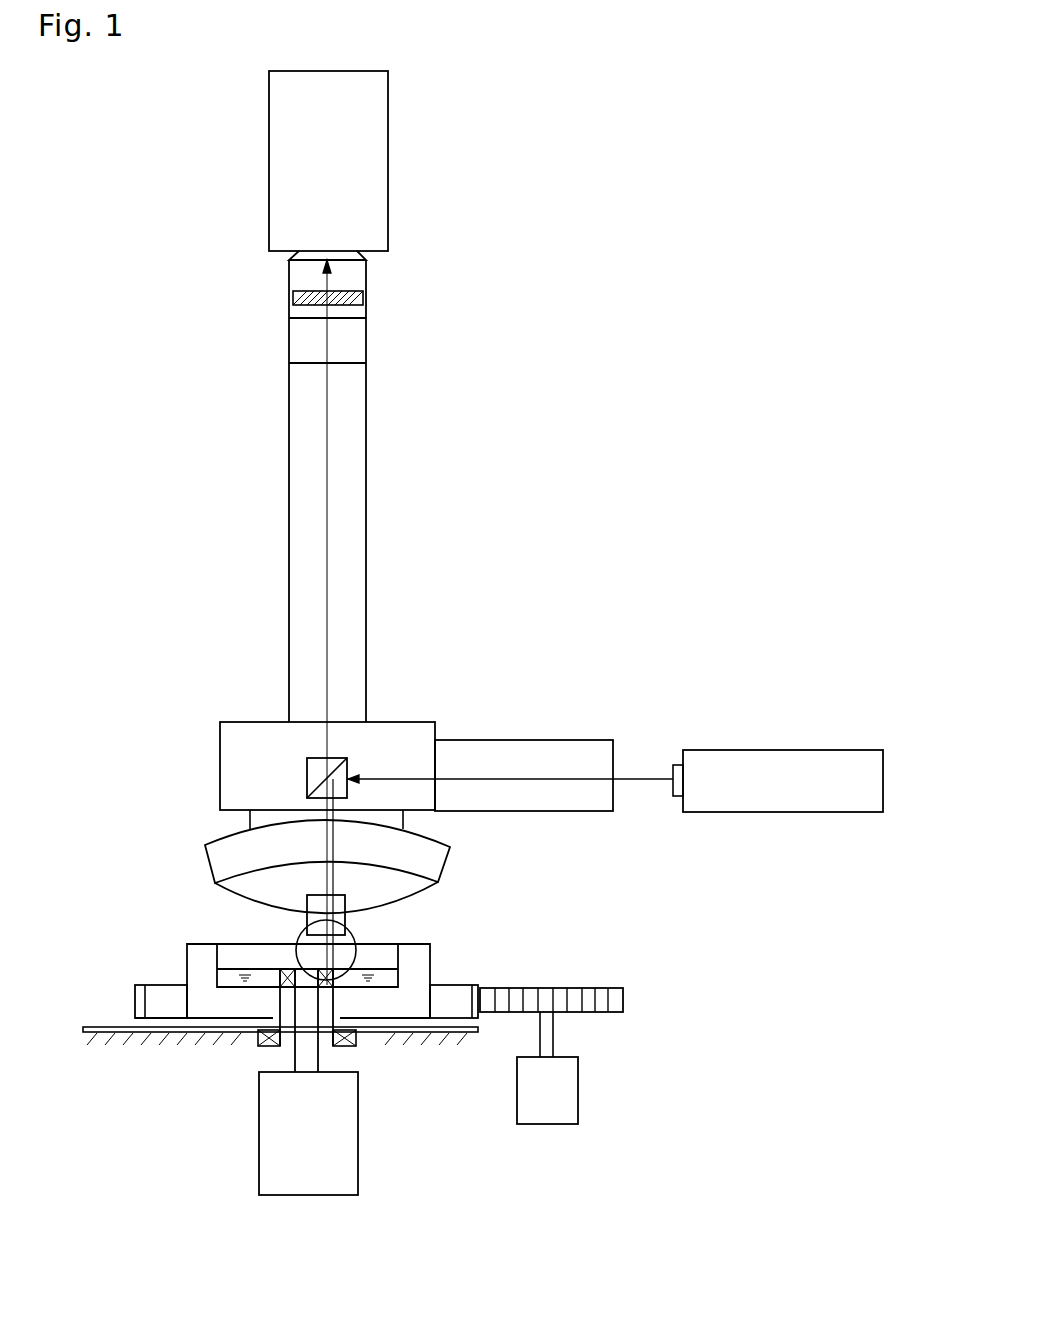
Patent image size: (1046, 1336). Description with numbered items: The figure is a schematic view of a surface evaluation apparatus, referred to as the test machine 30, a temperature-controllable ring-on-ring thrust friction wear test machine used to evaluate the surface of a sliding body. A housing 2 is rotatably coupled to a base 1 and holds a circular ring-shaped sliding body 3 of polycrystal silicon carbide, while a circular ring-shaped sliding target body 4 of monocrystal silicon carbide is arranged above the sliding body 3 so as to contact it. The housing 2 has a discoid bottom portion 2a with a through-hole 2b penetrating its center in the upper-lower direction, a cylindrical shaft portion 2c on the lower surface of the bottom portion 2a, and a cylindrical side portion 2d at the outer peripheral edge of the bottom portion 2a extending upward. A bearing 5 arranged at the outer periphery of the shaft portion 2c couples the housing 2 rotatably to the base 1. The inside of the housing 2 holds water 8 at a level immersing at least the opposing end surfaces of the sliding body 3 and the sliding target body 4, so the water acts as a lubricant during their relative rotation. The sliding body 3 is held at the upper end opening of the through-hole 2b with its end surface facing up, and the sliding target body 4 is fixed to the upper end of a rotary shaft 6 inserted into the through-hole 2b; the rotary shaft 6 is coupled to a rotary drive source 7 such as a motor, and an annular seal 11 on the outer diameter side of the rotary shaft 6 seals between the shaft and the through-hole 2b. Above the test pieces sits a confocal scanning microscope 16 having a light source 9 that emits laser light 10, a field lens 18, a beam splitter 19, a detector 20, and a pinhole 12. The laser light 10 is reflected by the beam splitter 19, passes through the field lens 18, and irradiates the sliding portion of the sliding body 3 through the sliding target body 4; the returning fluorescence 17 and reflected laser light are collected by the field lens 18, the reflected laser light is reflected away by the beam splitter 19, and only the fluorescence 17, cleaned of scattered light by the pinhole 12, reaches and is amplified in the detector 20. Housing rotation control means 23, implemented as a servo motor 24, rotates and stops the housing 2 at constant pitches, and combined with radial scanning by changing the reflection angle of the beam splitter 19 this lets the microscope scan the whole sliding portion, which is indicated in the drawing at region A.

The base 1 is at (425, 1032).
The housing 2 is at (392, 1003).
The bottom portion 2a is at (217, 1000).
The through-hole 2b is at (290, 1070).
The shaft portion 2c is at (280, 1040).
The side portion 2d is at (203, 951).
The sliding body 3 is at (356, 968).
The sliding target body 4 is at (350, 952).
The bearing 5 is at (272, 1035).
The rotary shaft 6 is at (308, 1060).
The rotary drive source 7 is at (307, 1178).
The water 8 is at (280, 983).
The light source 9 is at (782, 765).
The laser light 10 is at (645, 778).
The annular seal 11 is at (262, 1000).
The pinhole 12 is at (363, 292).
The confocal scanning microscope 16 is at (253, 720).
The fluorescence 17 is at (327, 463).
The field lens 18 is at (308, 918).
The beam splitter 19 is at (313, 774).
The detector 20 is at (365, 166).
The housing rotation control means 23 is at (485, 1034).
The servo motor 24 is at (548, 1105).
The test machine 30 is at (619, 385).
The observation region A is at (349, 943).